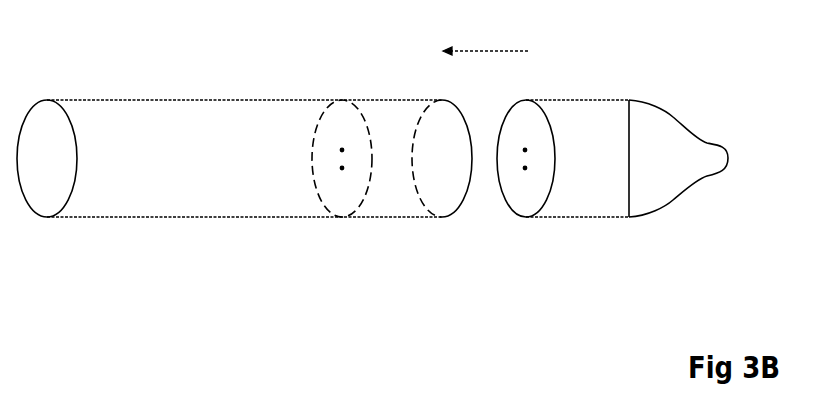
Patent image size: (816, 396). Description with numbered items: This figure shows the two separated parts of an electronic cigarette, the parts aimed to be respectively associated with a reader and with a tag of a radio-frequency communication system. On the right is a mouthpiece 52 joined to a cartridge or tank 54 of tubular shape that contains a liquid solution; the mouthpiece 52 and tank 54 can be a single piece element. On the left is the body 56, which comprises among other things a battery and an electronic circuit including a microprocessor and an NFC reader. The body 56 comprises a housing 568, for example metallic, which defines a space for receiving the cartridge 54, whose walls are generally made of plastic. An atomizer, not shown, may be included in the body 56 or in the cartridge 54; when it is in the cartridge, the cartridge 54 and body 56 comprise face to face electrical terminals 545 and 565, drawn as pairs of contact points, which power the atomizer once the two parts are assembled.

The mouthpiece 52 is at (612, 163).
The cartridge or tank 54 is at (585, 207).
The electrical terminals 545 is at (525, 168).
The body 56 is at (244, 184).
The electrical terminals 565 is at (342, 168).
The housing 568 is at (205, 100).